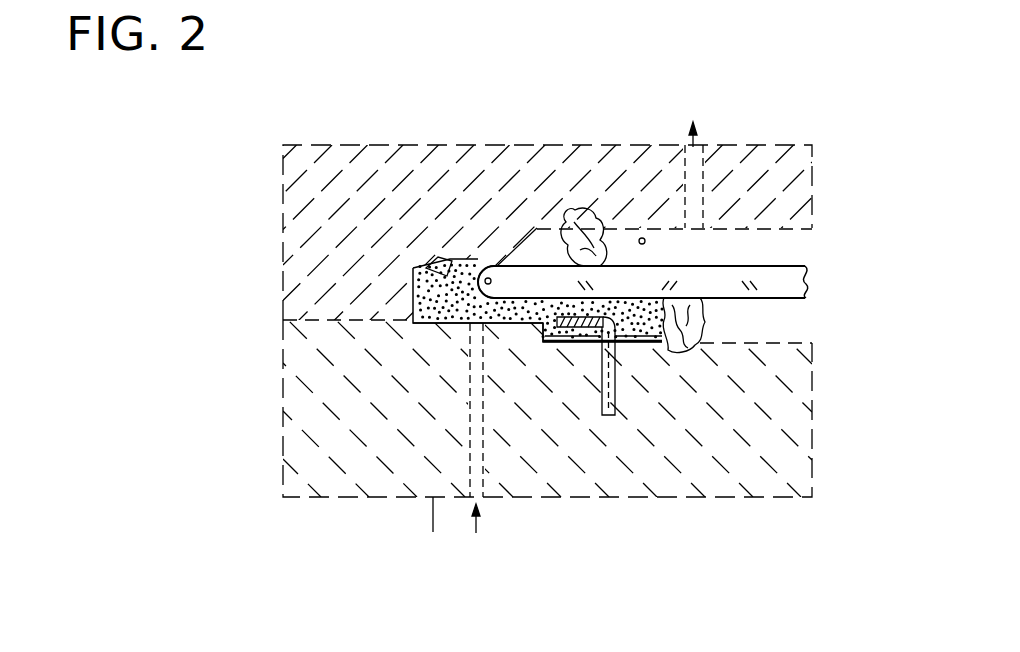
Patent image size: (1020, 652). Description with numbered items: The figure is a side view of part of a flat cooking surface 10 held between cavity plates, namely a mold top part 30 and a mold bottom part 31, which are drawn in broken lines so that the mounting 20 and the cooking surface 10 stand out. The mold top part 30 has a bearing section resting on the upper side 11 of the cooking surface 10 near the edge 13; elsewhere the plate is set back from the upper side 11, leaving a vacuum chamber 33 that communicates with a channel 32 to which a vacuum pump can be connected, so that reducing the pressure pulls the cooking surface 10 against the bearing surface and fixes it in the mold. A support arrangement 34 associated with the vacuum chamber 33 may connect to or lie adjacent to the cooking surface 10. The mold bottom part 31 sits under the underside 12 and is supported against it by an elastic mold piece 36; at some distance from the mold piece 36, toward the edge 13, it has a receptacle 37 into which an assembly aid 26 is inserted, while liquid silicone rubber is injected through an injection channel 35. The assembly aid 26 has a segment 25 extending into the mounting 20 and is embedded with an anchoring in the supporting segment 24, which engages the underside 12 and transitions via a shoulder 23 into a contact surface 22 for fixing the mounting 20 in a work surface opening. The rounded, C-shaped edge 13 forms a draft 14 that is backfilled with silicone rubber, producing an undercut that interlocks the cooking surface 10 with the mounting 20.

The cooking surface 10 is at (767, 275).
The upper side 11 is at (793, 262).
The underside 12 is at (770, 298).
The edge 13 is at (488, 278).
The draft 14 is at (473, 262).
The mounting 20 is at (450, 283).
The contact surface 22 is at (437, 325).
The shoulder 23 is at (541, 340).
The supporting segment 24 is at (650, 343).
The segment 25 is at (593, 340).
The assembly aid 26 is at (643, 340).
The mold top part 30 is at (284, 214).
The mold bottom part 31 is at (297, 380).
The channel 32 is at (695, 183).
The vacuum chamber 33 is at (642, 238).
The support arrangement 34 is at (583, 210).
The injection channel 35 is at (471, 449).
The elastic mold piece 36 is at (706, 352).
The receptacle 37 is at (608, 342).